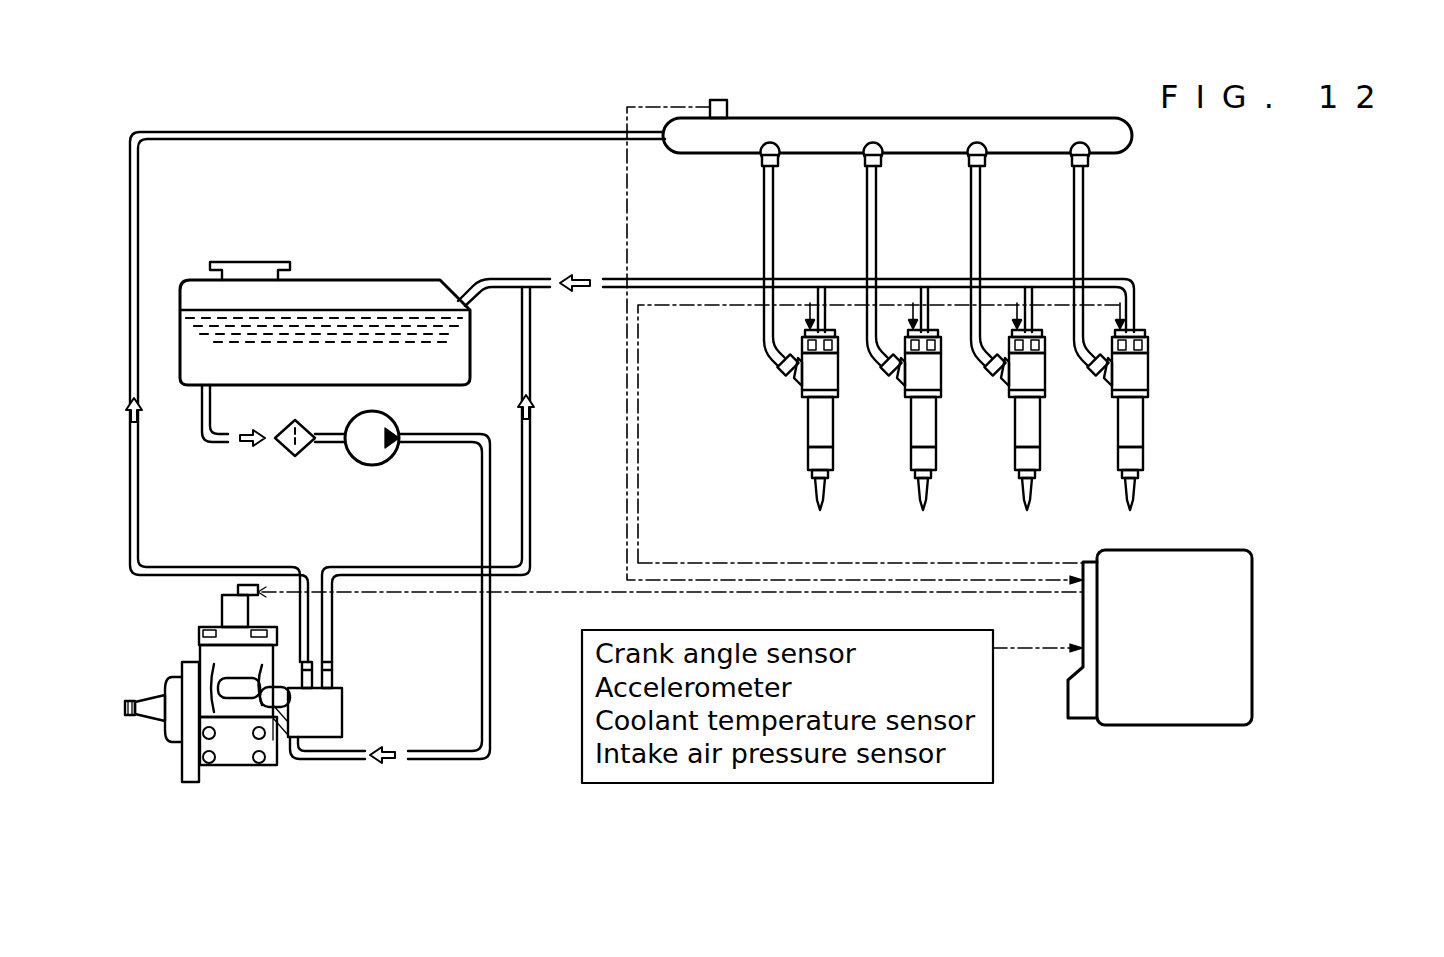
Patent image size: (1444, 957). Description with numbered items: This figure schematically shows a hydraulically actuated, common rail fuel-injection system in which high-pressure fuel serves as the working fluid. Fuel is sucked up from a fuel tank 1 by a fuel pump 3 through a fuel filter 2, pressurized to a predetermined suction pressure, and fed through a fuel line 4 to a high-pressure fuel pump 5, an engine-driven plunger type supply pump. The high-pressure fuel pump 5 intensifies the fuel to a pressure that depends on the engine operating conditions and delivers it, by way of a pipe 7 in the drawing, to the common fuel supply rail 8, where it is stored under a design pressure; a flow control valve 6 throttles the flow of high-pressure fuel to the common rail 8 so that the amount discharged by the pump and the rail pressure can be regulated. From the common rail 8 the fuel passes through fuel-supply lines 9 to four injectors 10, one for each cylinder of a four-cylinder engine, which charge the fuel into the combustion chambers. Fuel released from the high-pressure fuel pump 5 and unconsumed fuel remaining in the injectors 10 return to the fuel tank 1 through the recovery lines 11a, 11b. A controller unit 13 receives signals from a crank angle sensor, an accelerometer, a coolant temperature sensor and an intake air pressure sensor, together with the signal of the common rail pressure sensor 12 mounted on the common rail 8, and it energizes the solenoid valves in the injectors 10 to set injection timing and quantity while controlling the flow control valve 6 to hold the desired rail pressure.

The fuel tank 1 is at (380, 290).
The fuel filter 2 is at (286, 448).
The fuel pump 3 is at (364, 466).
The fuel line 4 is at (482, 680).
The high-pressure fuel pump 5 is at (233, 758).
The flow control valve 6 is at (334, 700).
The high pressure pipe 7 is at (140, 475).
The common fuel supply rail 8 is at (1030, 128).
The fuel-supply lines 9 is at (774, 233).
The injectors 10 is at (824, 433).
The return pipe 11a is at (535, 478).
The fuel recovery line 11b is at (672, 279).
The common rail pressure sensor 12 is at (722, 98).
The controller unit 13 is at (1232, 648).